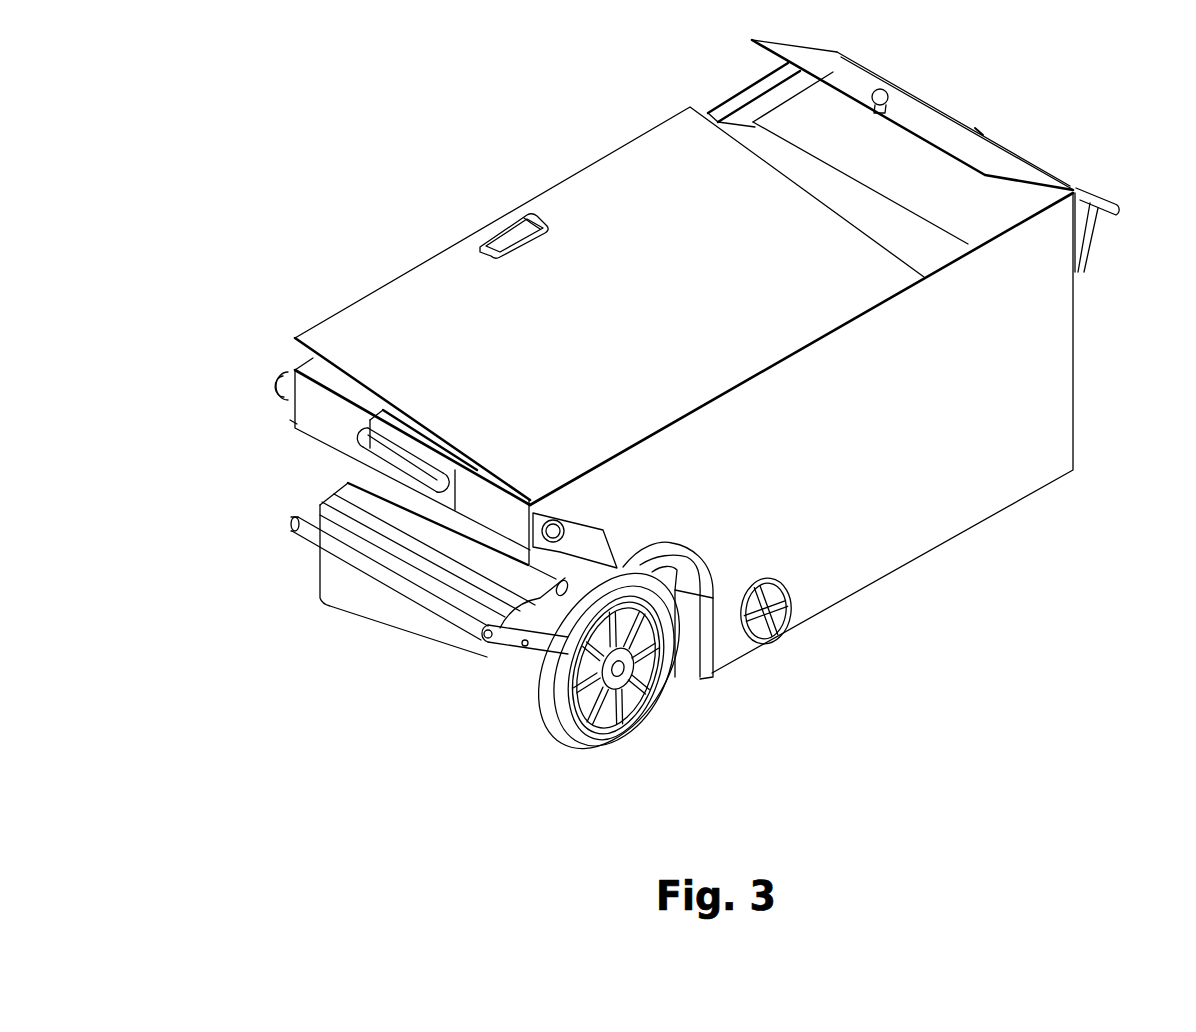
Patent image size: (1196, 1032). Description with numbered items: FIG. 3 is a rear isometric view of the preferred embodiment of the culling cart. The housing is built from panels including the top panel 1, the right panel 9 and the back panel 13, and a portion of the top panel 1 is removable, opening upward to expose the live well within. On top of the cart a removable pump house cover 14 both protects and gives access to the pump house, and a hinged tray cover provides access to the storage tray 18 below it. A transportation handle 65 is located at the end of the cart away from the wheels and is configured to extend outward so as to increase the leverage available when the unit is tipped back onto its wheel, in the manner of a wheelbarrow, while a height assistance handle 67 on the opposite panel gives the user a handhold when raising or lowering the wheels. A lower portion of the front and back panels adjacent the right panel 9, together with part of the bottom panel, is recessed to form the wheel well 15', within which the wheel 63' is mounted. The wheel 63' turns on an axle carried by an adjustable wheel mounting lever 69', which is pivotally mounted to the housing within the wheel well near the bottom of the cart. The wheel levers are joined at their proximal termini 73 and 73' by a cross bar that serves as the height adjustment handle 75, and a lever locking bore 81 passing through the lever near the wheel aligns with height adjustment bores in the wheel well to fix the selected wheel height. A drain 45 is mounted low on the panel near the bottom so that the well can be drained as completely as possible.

The top panel 1 is at (407, 292).
The back panel 13 is at (958, 497).
The pump house cover 14 is at (733, 123).
The storage tray 18 is at (980, 210).
The transportation handle 65 is at (1080, 190).
The height assistance handle 67 is at (390, 450).
The proximal terminus of wheel mounting lever 73 is at (329, 578).
The height adjustment handle 75 is at (380, 587).
The right panel 9 is at (420, 638).
The adjustable wheel mounting lever 69' is at (486, 700).
The proximal terminus of wheel mounting lever 73' is at (403, 697).
The lever locking bore 81 is at (527, 648).
The wheel 63' is at (624, 666).
The wheel well 15' is at (729, 633).
The drain 45 is at (790, 618).